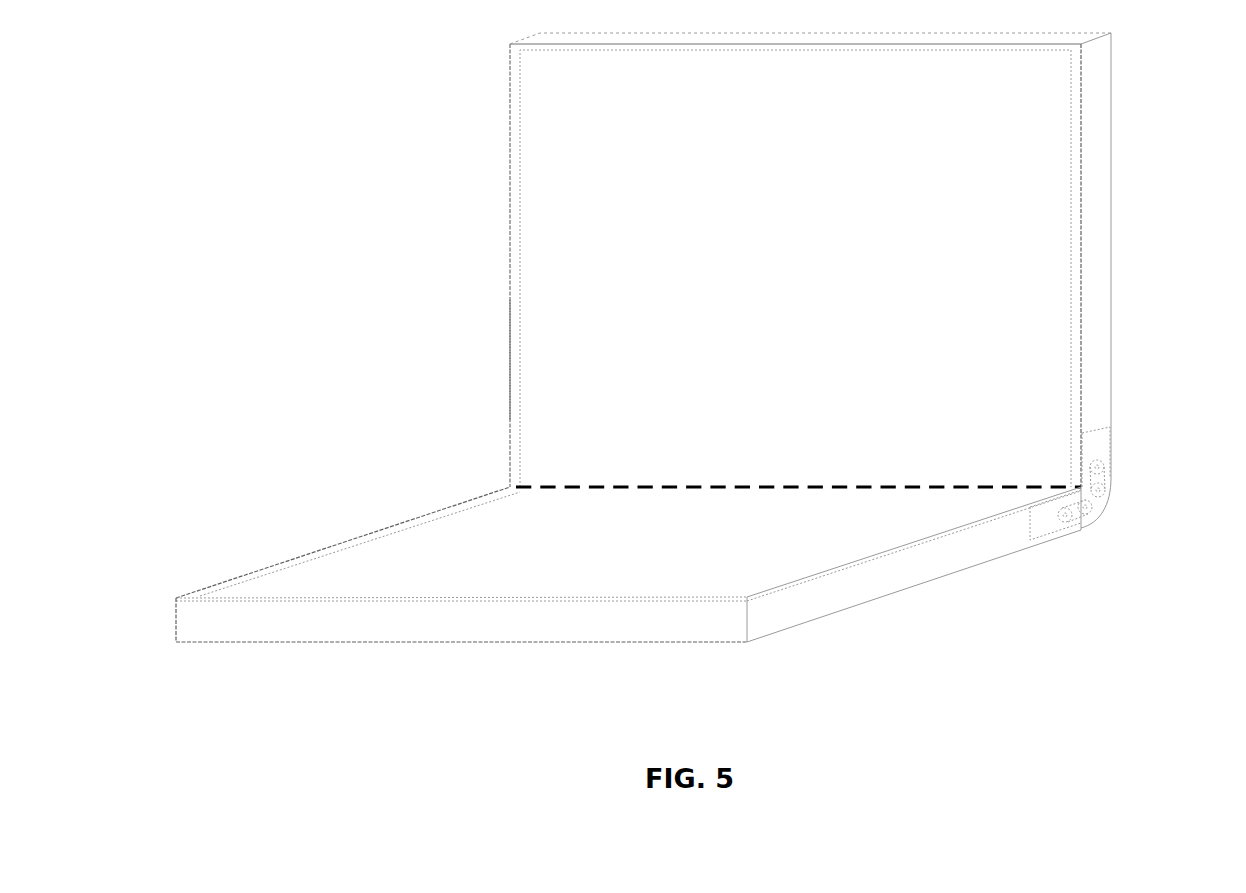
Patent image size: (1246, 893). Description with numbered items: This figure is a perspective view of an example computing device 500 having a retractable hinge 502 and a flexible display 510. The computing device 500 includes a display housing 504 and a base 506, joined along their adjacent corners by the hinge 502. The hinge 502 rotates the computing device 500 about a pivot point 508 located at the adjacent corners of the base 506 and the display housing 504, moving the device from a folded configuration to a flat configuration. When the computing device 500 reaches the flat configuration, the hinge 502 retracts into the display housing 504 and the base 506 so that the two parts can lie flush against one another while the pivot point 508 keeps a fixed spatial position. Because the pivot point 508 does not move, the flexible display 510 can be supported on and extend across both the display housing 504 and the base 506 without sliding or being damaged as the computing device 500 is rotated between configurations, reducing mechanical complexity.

The computing device 500 is at (365, 150).
The retractable hinge 502 is at (1156, 566).
The display housing 504 is at (1108, 119).
The base 506 is at (290, 641).
The pivot point 508 is at (1078, 488).
The flexible display 510 is at (521, 371).